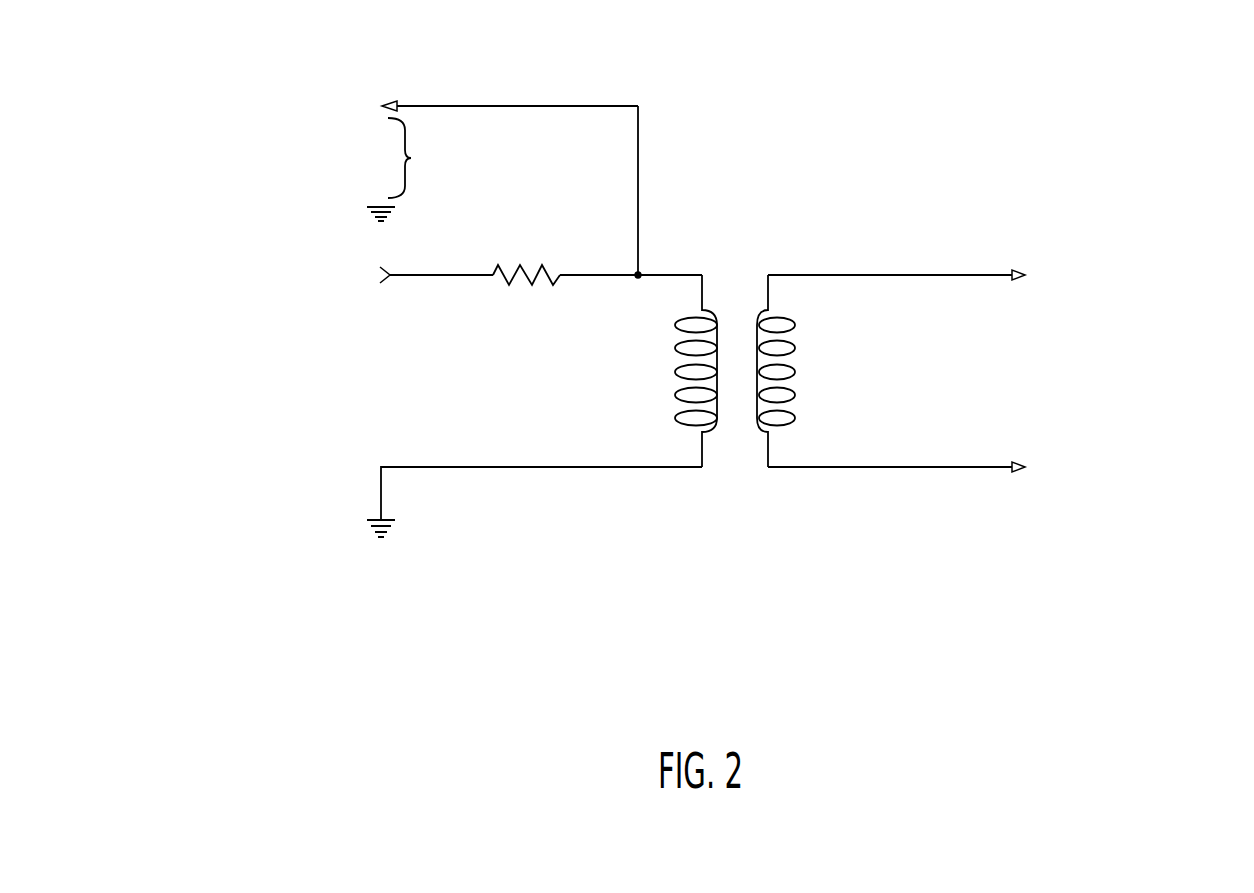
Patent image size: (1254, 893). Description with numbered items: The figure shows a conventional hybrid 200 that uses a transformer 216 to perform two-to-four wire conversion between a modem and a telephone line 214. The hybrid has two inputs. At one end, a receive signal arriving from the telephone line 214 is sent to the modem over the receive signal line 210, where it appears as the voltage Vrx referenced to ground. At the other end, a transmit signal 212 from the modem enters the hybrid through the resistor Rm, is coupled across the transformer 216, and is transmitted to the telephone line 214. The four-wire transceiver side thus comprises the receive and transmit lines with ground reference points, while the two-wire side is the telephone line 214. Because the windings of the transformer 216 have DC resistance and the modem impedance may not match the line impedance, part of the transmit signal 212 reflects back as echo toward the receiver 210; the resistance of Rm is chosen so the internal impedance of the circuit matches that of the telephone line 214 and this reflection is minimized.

The hybrid 200 is at (888, 552).
The receive signal line 210 is at (356, 65).
The transmit signal 212 is at (276, 295).
The telephone line 214 is at (1145, 397).
The transformer 216 is at (733, 263).